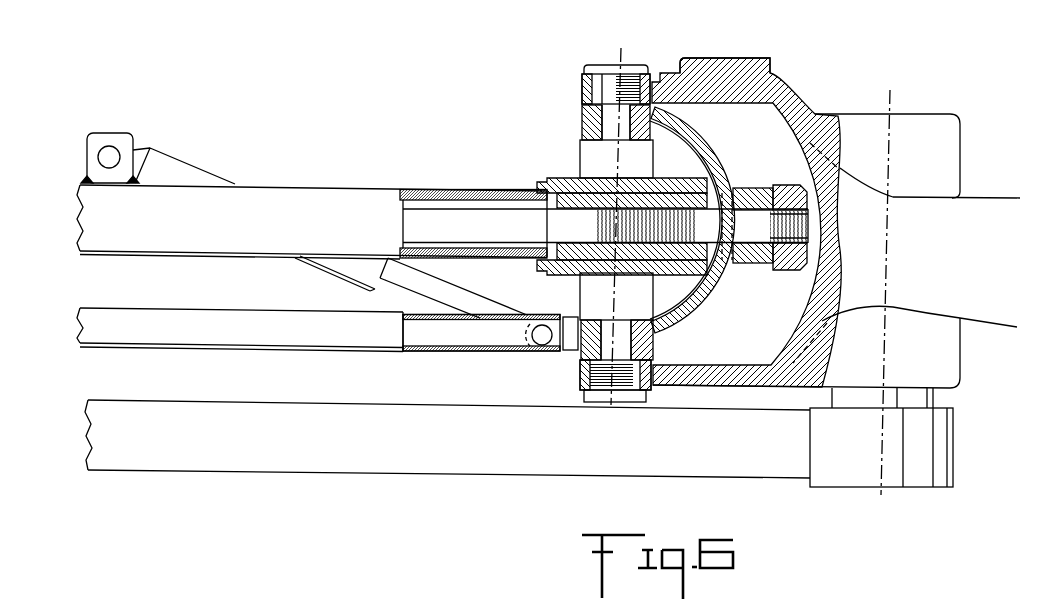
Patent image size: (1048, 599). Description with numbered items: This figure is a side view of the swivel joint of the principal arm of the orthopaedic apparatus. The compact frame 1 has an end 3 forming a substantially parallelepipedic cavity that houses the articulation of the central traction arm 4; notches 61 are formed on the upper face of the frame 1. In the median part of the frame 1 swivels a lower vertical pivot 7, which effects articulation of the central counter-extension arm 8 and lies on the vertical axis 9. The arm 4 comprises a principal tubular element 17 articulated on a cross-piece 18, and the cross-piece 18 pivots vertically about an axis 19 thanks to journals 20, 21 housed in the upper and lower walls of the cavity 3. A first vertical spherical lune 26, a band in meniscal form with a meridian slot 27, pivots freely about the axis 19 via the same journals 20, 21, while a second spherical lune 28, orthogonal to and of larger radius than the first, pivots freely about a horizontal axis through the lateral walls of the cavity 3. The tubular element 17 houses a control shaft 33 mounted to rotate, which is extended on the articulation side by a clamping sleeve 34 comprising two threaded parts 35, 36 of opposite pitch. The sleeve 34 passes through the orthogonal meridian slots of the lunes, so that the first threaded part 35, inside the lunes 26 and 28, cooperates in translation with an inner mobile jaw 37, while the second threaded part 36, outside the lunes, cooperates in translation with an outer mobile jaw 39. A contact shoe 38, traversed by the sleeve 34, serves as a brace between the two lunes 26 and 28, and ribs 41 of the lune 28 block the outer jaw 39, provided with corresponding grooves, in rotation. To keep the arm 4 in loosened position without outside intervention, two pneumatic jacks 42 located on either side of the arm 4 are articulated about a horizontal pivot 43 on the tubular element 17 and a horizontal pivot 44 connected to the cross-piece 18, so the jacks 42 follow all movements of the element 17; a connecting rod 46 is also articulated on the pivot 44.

The compact frame 1 is at (978, 217).
The end of the frame forming a cavity 3 is at (707, 373).
The central traction arm 4 is at (347, 178).
The lower vertical pivot 7 is at (858, 397).
The central counter-extension arm 8 is at (343, 474).
The vertical axis 9 is at (897, 123).
The principal tubular element 17 is at (282, 188).
The cross-piece 18 is at (590, 155).
The axis 19 is at (621, 57).
The journal 20 is at (593, 72).
The journal 21 is at (580, 393).
The first vertical spherical lune 26 is at (698, 150).
The meridian slot 27 is at (703, 288).
The second spherical lune 28 is at (757, 190).
The control shaft 33 is at (428, 187).
The clamping sleeve 34 is at (707, 292).
The first threaded part 35 is at (623, 190).
The second threaded part 36 is at (790, 218).
The inner mobile jaw 37 is at (668, 190).
The contact shoe 38 is at (740, 193).
The outer mobile jaw 39 is at (800, 270).
The ribs 41 is at (763, 267).
The jacks 42 is at (187, 168).
The horizontal pivot 43 is at (110, 152).
The horizontal pivot 44 is at (542, 345).
The connecting rod 46 is at (247, 343).
The notches 61 is at (744, 51).